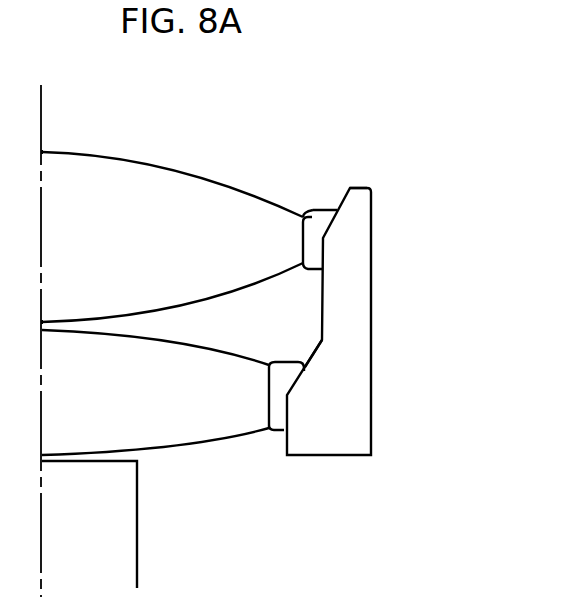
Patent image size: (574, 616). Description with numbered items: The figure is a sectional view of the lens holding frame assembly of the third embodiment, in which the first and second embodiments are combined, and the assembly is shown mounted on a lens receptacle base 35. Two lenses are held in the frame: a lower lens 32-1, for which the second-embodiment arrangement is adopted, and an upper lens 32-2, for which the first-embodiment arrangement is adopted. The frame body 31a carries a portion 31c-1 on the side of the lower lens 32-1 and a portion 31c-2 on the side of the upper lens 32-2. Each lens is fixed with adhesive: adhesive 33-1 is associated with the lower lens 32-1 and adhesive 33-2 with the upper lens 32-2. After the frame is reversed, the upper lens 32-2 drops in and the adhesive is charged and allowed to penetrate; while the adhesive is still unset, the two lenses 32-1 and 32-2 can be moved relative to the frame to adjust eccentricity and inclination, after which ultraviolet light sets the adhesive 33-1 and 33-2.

The upper lens 32-2 is at (131, 181).
The lower lens 32-1 is at (181, 440).
The adhesive 33-2 is at (317, 218).
The adhesive 33-1 is at (282, 423).
The lens barrel body 31a is at (356, 253).
The lens receptacle portion element 31c-2 is at (346, 190).
The lens receptacle portion element 31c-1 is at (309, 352).
The lens receptacle base 35 is at (120, 560).